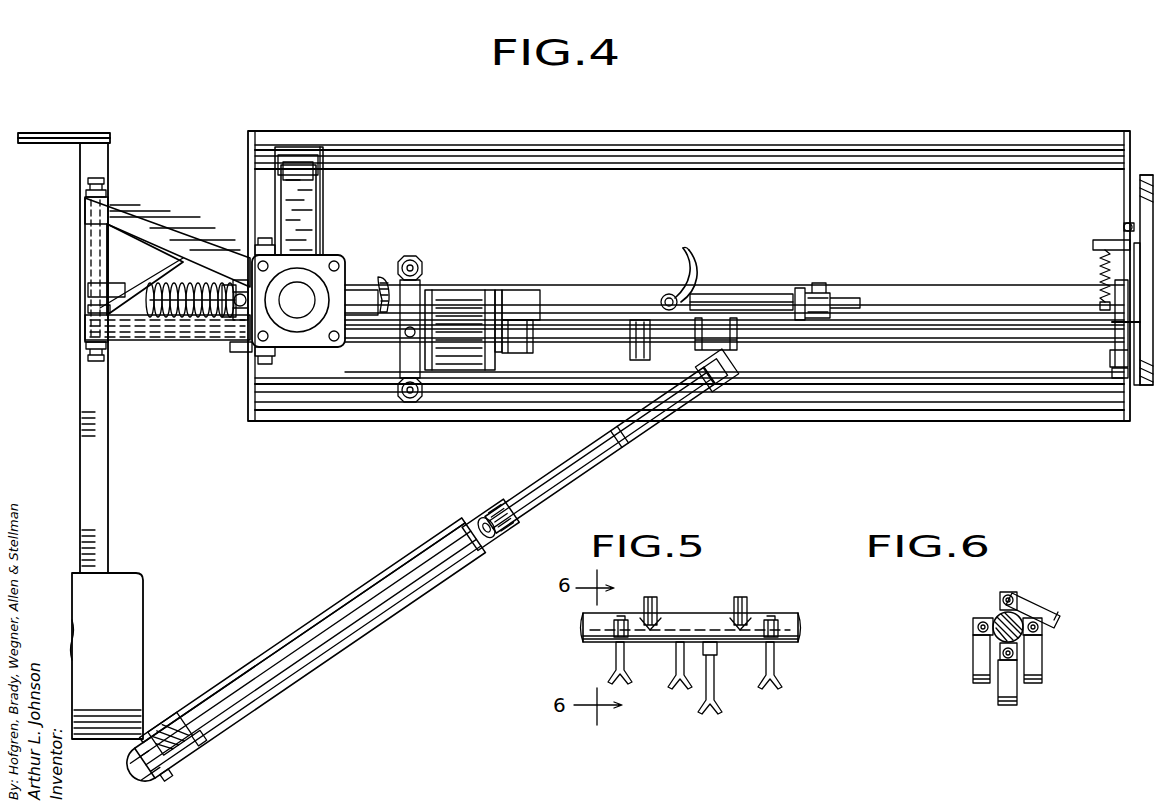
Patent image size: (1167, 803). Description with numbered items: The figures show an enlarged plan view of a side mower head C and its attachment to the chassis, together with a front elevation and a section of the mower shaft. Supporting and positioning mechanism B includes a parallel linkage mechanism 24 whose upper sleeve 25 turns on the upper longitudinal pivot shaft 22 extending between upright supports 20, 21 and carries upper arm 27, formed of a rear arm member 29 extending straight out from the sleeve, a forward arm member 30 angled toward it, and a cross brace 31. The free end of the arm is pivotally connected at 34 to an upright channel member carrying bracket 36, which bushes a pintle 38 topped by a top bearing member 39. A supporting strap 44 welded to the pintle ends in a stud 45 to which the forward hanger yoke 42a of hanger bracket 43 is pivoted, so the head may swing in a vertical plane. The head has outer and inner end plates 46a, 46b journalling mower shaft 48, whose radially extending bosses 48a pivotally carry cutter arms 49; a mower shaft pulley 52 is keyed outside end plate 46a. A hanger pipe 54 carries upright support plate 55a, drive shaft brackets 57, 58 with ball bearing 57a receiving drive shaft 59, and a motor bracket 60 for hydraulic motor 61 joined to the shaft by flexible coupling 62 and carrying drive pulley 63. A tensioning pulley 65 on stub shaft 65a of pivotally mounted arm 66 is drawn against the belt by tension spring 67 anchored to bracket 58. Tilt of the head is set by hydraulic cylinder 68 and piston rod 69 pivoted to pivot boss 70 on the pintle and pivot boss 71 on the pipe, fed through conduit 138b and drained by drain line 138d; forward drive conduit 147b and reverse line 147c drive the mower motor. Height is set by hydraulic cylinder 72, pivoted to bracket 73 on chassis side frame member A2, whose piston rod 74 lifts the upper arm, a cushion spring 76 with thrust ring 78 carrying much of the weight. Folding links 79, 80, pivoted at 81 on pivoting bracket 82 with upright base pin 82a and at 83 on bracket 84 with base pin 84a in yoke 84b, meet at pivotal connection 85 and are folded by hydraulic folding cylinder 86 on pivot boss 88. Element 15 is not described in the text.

In FIG. 4, the chassis side frame member A2 is at (112, 150).
In FIG. 4, the supporting and positioning mechanism B is at (171, 194).
In FIG. 4, the side mower head C is at (865, 119).
In FIG. 4, the bracket 15 is at (238, 352).
In FIG. 4, the upright support 20 is at (86, 326).
In FIG. 4, the upright support 21 is at (84, 200).
In FIG. 4, the upper longitudinal pivot shaft 22 is at (86, 352).
In FIG. 4, the parallel linkage mechanism 24 is at (214, 233).
In FIG. 4, the upper sleeve 25 is at (92, 246).
In FIG. 4, the upper arm 27 is at (154, 340).
In FIG. 4, the rear arm member 29 is at (218, 342).
In FIG. 4, the forward arm member 30 is at (130, 218).
In FIG. 4, the cross brace 31 is at (156, 280).
In FIG. 4, the pivotal connection 34 is at (266, 364).
In FIG. 4, the bracket 36 is at (328, 263).
In FIG. 4, the pintle 38 is at (300, 300).
In FIG. 4, the top bearing member 39 is at (312, 328).
In FIG. 4, the forward hanger yoke 42a is at (312, 157).
In FIG. 4, the hanger bracket 43 is at (322, 212).
In FIG. 4, the supporting strap 44 is at (312, 196).
In FIG. 4, the stud 45 is at (300, 155).
In FIG. 4, the outer end plate 46a is at (1126, 374).
In FIG. 4, the inner end plate 46b is at (252, 400).
In FIG. 4, the mower shaft pulley 52 is at (1142, 172).
In FIG. 4, the hanger pipe 54 is at (922, 290).
In FIG. 4, the upright support plate 55a is at (1134, 386).
In FIG. 4, the drive shaft bracket 57 is at (645, 362).
In FIG. 4, the ball bearing 57a is at (632, 348).
In FIG. 4, the drive shaft bracket 58 is at (1114, 351).
In FIG. 4, the drive shaft 59 is at (866, 338).
In FIG. 4, the motor bracket 60 is at (494, 352).
In FIG. 4, the hydraulic motor 61 is at (440, 370).
In FIG. 4, the flexible coupling 62 is at (535, 349).
In FIG. 4, the drive pulley 63 is at (1146, 386).
In FIG. 4, the tensioning pulley 65 is at (1146, 205).
In FIG. 4, the stub shaft 65a is at (1124, 226).
In FIG. 4, the pivotally mounted arm 66 is at (1138, 216).
In FIG. 4, the tension spring 67 is at (1100, 267).
In FIG. 4, the hydraulic cylinder 68 is at (556, 284).
In FIG. 4, the piston rod 69 is at (736, 294).
In FIG. 4, the pivot boss 70 is at (382, 292).
In FIG. 4, the pivot boss 71 is at (838, 290).
In FIG. 4, the hydraulic cylinder 72 is at (125, 289).
In FIG. 4, the bracket 73 is at (88, 311).
In FIG. 4, the piston rod 74 is at (236, 292).
In FIG. 4, the cushion spring 76 is at (193, 320).
In FIG. 4, the thrust ring 78 is at (222, 318).
In FIG. 4, the folding link 79 is at (332, 594).
In FIG. 4, the folding link 80 is at (626, 446).
In FIG. 4, the pivot 81 is at (150, 774).
In FIG. 4, the pivoting bracket 82 is at (114, 745).
In FIG. 4, the upright base pin 82a is at (150, 722).
In FIG. 4, the pivot 83 is at (722, 396).
In FIG. 4, the bracket 84 is at (745, 372).
In FIG. 4, the upright base pin 84a is at (702, 372).
In FIG. 4, the yoke 84b is at (740, 350).
In FIG. 4, the pivotal connection 85 is at (504, 528).
In FIG. 4, the hydraulic folding cylinder 86 is at (264, 642).
In FIG. 4, the pivot boss 88 is at (186, 740).
In FIG. 4, the conduit 138b is at (694, 258).
In FIG. 4, the drain line 138d is at (388, 316).
In FIG. 4, the forward drive conduit 147b is at (408, 402).
In FIG. 4, the reverse line 147c is at (414, 260).
In FIG. 5, the mower shaft 48 is at (700, 612).
In FIG. 6, the mower shaft 48 is at (993, 620).
In FIG. 5, the radially extending boss 48a is at (718, 655).
In FIG. 6, the radially extending boss 48a is at (1012, 598).
In FIG. 5, the cutter arm 49 is at (672, 682).
In FIG. 6, the cutter arm 49 is at (1000, 694).